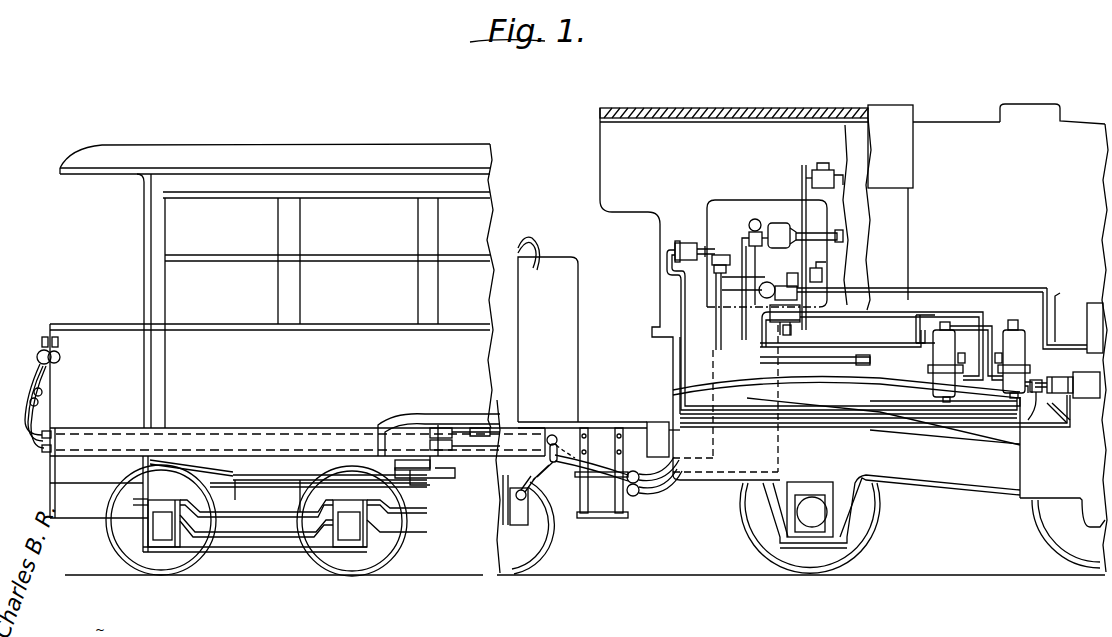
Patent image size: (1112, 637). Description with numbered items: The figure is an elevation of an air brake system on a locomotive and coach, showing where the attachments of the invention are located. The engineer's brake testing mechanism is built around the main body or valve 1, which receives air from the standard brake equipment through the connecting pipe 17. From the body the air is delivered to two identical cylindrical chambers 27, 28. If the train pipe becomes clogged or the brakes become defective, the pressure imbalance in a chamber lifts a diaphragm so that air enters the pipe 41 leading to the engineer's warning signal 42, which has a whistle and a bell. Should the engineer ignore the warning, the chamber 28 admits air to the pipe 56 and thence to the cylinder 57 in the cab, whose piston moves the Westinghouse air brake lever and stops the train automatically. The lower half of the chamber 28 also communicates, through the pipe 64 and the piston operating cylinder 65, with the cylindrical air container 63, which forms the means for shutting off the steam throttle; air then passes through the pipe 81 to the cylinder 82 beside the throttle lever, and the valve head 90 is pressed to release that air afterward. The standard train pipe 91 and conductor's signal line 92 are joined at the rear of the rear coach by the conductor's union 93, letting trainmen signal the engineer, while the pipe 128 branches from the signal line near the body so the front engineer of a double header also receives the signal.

The main body or valve 1 is at (801, 317).
The connecting pipe 17 is at (903, 286).
The cylindrical chamber 27 is at (933, 345).
The cylindrical chamber 28 is at (1024, 349).
The pipe 41 is at (810, 392).
The engineer's warning signal 42 is at (838, 182).
The pipe 56 is at (686, 341).
The cylinder 57 is at (693, 239).
The air container 63 is at (1080, 330).
The pipe 64 is at (1058, 390).
The piston operating cylinder 65 is at (1060, 375).
The pipe 81 is at (995, 440).
The cylinder 82 is at (780, 225).
The valve head 90 is at (755, 222).
The train pipe 91 is at (652, 490).
The conductor's signal line 92 is at (672, 490).
The conductor's union 93 is at (42, 354).
The pipe 128 is at (851, 362).